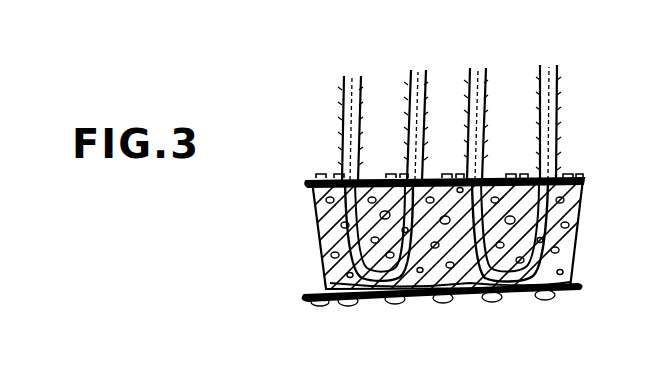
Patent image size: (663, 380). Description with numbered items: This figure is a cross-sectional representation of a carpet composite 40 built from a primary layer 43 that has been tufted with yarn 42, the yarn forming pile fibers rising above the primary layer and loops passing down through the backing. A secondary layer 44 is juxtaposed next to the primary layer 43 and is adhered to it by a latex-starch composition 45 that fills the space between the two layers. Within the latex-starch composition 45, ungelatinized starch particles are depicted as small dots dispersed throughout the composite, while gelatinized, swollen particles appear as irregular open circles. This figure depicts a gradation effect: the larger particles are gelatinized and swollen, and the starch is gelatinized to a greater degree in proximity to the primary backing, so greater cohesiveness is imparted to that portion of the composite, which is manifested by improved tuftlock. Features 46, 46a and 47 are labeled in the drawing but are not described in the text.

The carpet composite 40 is at (302, 231).
The yarn 42 is at (545, 129).
The primary layer 43 is at (568, 176).
The secondary layer 44 is at (574, 290).
The latex-starch composition 45 is at (577, 218).
The fiber loop 46 is at (420, 289).
The fiber loop portion 46a is at (473, 284).
The bottom bond line 47 is at (372, 289).